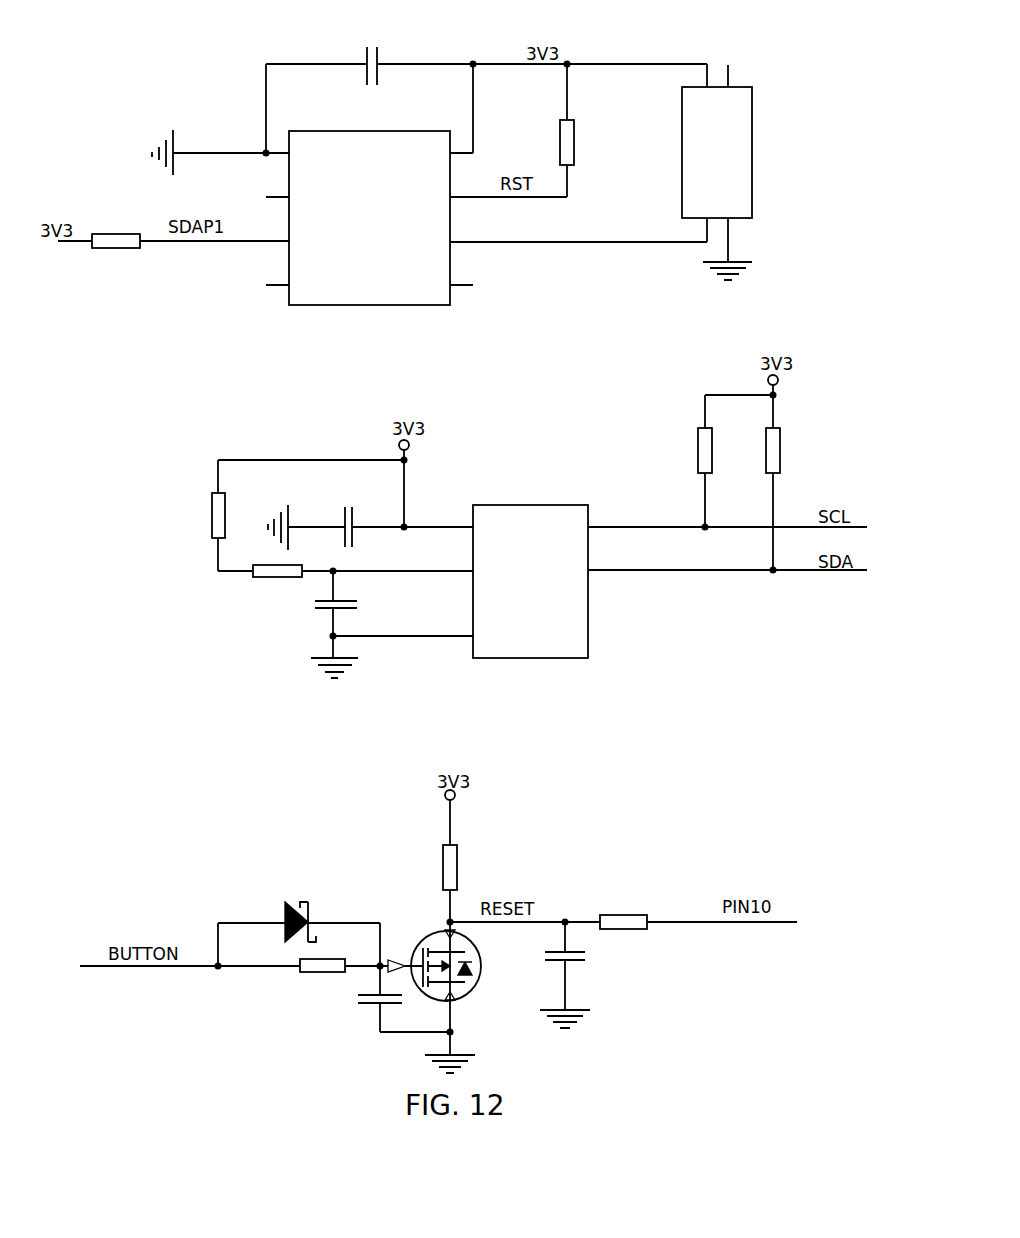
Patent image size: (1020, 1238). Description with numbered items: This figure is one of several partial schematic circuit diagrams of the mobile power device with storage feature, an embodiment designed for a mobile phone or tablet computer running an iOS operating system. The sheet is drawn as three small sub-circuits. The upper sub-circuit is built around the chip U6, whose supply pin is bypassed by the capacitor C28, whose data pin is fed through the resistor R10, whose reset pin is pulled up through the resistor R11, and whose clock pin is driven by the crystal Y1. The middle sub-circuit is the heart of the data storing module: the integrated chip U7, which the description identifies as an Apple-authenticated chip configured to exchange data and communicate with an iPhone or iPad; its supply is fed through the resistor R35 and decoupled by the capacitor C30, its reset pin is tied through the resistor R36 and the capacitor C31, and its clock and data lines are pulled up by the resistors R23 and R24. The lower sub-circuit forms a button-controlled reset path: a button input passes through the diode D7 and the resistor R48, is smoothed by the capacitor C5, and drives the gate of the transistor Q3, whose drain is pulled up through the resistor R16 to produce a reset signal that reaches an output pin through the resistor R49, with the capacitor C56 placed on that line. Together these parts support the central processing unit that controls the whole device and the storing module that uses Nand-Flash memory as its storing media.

The IC U6 is at (367, 221).
The capacitor 0.1uF C28 is at (384, 64).
The resistor 10K R10 is at (116, 240).
The resistor 10K R11 is at (585, 141).
The crystal Y1 is at (749, 142).
The integrated chip U7 is at (538, 561).
The resistor 0R R35 is at (237, 511).
The resistor 100R R36 is at (273, 573).
The capacitor 0.1uF C30 is at (364, 526).
The capacitor 0.1uF C31 is at (364, 611).
The resistor 2.2K R23 is at (727, 450).
The resistor 2.2K R24 is at (796, 450).
The Schottky diode RB521S30 D7 is at (312, 901).
The resistor 4.7M R48 is at (320, 969).
The capacitor 1uF C5 is at (371, 1023).
The resistor 10K R16 is at (470, 867).
The NMOS transistor Q3 is at (450, 975).
The resistor NC R49 is at (623, 924).
The capacitor NC C56 is at (577, 978).